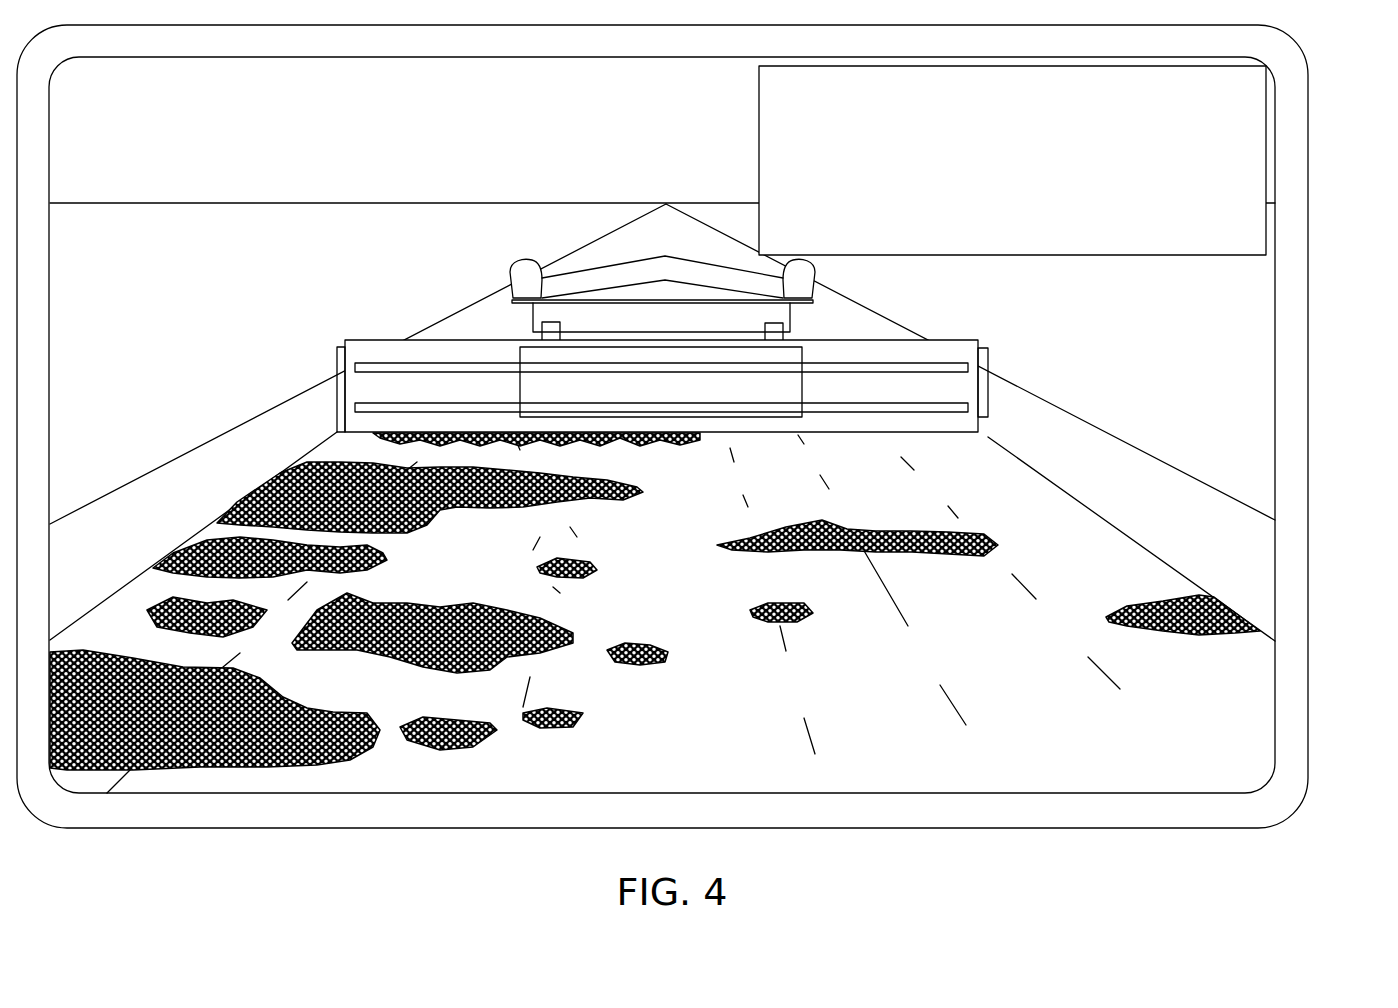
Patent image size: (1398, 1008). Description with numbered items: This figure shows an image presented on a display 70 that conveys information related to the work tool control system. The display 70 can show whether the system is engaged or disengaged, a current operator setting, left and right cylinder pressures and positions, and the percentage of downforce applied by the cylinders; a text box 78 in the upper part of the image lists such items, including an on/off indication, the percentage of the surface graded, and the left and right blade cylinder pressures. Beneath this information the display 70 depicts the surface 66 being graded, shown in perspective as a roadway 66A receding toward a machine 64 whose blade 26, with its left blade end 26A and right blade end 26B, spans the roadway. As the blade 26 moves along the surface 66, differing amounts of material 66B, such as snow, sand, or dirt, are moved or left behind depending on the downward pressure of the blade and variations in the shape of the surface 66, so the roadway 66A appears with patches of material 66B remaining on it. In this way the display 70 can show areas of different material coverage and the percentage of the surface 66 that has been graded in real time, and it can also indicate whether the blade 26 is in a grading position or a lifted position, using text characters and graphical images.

The display 70 is at (1308, 107).
The status text box 78 is at (759, 118).
The blade 26 is at (472, 332).
The left blade end 26A is at (337, 397).
The right blade end 26B is at (988, 397).
The machine cab image 64 is at (378, 340).
The surface 66 is at (217, 475).
The roadway 66A is at (1077, 560).
The material 66B is at (387, 555).